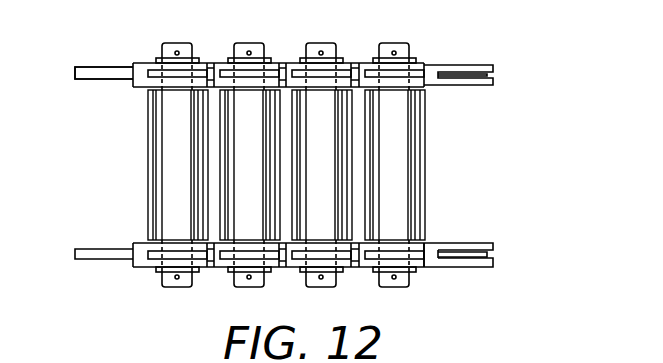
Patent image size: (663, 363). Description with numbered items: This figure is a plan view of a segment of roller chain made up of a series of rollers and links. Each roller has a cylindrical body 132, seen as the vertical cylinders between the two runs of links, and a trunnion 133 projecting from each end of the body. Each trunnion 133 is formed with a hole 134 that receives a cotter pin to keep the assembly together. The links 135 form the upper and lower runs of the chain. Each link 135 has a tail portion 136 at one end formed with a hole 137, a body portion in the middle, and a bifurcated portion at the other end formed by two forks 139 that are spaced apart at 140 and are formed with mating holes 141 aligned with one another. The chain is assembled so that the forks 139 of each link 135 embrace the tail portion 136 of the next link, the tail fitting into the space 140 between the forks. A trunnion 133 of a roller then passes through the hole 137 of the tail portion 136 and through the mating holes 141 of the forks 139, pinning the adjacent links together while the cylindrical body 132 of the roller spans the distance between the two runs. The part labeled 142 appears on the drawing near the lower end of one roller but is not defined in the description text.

The roller 132 is at (175, 167).
The pin head 133 is at (410, 286).
The pin 134 is at (251, 52).
The outer link plate end 135 is at (433, 67).
The inner link plate 136 is at (129, 72).
The link plate end 137 is at (90, 77).
The outer link plate 139 is at (494, 244).
The outer link plate 140 is at (493, 254).
The inner link plate 141 is at (489, 220).
The pin flange 142 is at (158, 270).